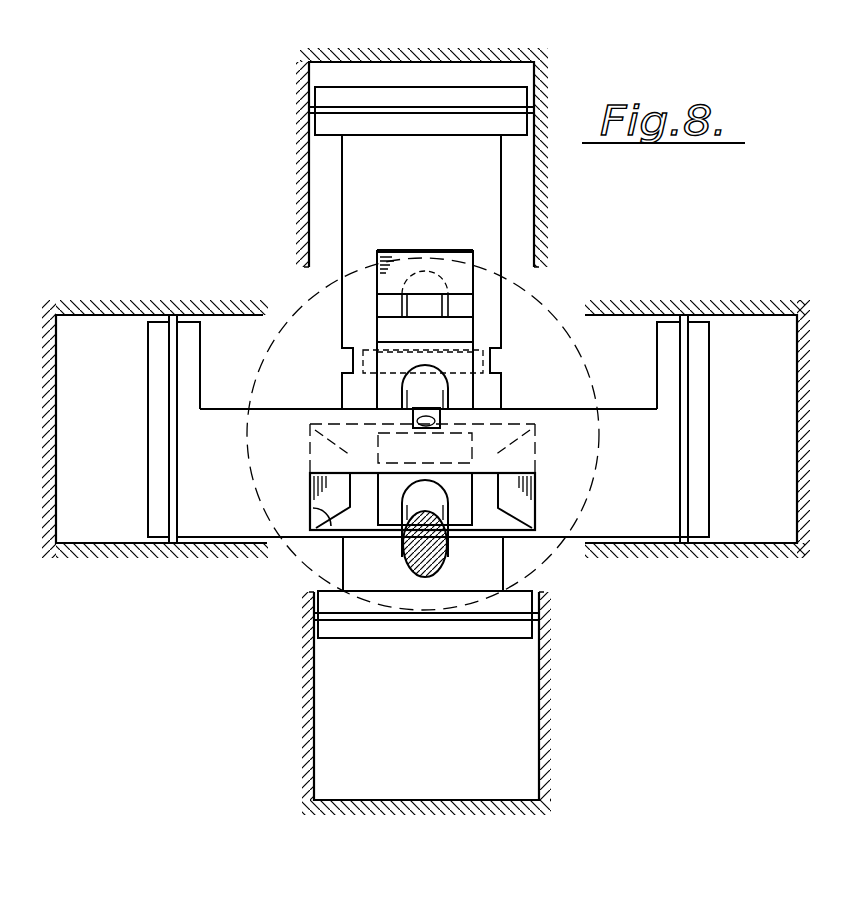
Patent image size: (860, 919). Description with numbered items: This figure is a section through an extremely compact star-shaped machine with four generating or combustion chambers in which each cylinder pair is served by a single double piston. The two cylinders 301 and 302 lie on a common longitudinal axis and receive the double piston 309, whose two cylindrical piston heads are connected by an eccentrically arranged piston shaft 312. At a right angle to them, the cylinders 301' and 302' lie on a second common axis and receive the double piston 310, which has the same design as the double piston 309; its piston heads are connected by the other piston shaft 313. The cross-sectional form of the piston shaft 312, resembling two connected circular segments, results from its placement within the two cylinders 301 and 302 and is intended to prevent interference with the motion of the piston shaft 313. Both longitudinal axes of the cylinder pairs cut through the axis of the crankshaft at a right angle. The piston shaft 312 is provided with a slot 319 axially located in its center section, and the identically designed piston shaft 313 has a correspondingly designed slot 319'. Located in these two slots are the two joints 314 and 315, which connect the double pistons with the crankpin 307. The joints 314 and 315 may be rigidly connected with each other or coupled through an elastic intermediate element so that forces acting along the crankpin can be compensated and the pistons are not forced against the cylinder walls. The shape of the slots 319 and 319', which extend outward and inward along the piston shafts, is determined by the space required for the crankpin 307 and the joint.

The cylinder 301 is at (422, 140).
The cylinder 302 is at (453, 703).
The cylinder 301' is at (155, 410).
The cylinder 302' is at (697, 409).
The crankpin 307 is at (417, 389).
The double piston 309 is at (365, 93).
The double piston 310 is at (150, 446).
The piston shaft 312 is at (485, 190).
The piston shaft 313 is at (228, 420).
The joint 314 is at (482, 385).
The joint 315 is at (484, 488).
The slot 319 is at (464, 330).
The slot 319' is at (293, 554).